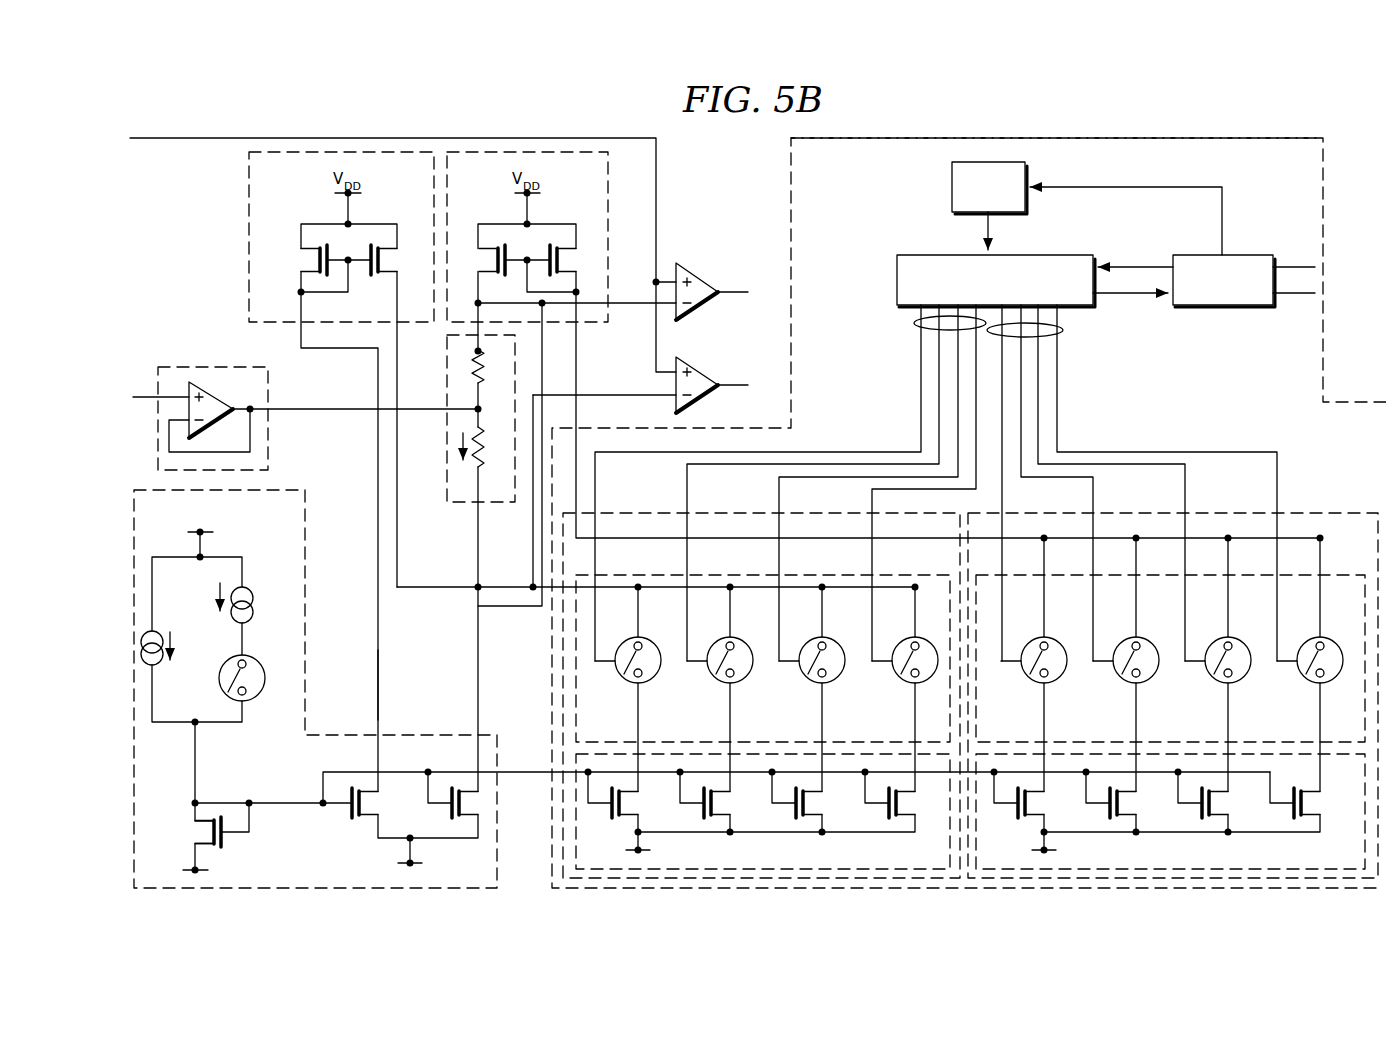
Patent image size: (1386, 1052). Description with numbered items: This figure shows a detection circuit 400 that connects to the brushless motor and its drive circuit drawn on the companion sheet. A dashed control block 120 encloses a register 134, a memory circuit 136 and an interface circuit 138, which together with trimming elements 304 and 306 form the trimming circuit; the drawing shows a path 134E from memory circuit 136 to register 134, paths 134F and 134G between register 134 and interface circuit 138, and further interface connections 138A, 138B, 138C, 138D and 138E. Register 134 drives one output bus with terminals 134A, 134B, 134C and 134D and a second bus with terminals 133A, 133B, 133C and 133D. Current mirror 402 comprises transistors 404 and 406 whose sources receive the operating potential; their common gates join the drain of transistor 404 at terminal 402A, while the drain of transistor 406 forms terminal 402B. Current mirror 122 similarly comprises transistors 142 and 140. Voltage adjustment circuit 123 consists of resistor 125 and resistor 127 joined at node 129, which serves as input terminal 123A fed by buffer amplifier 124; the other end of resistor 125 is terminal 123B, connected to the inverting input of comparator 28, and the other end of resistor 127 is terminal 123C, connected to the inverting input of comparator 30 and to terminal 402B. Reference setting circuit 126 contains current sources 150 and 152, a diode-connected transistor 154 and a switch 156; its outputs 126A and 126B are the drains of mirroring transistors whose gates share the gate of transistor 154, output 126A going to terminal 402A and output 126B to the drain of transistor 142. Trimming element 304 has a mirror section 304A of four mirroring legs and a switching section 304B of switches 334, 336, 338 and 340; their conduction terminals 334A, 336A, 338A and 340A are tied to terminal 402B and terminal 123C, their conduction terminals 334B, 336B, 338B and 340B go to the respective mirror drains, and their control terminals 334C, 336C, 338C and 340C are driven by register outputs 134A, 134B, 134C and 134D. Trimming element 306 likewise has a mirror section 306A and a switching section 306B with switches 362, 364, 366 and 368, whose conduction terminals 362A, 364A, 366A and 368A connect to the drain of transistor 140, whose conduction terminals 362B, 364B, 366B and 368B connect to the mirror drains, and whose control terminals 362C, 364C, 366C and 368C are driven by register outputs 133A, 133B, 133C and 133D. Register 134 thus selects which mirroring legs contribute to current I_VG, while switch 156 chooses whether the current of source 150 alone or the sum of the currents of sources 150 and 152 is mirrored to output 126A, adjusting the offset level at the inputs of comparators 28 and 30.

The detection circuit 400 is at (1292, 124).
The control circuit 120 is at (1125, 138).
The memory circuit 136 is at (1005, 162).
The register 134 is at (920, 255).
The memory element output 134E is at (990, 240).
The register input 134F is at (1120, 265).
The register output 134G is at (1105, 296).
The output terminal 134A is at (921, 356).
The output terminal 134B is at (939, 382).
The output terminal 134C is at (958, 407).
The output terminal 134D is at (976, 432).
The output terminal 133A is at (1002, 432).
The output terminal 133B is at (1021, 407).
The output terminal 133C is at (1038, 382).
The output terminal 133D is at (1057, 356).
The interface circuit 138 is at (1230, 305).
The interface circuit output 138A is at (1222, 250).
The interface circuit output 138B is at (1160, 264).
The interface circuit input 138C is at (1160, 296).
The interface circuit terminal 138D is at (1292, 264).
The interface circuit terminal 138E is at (1295, 296).
The current mirror 402 is at (249, 221).
The transistor 404 is at (300, 268).
The transistor 406 is at (405, 268).
The terminal 402A is at (300, 310).
The terminal 402B is at (397, 311).
The current mirror 122 is at (607, 212).
The transistor 142 is at (478, 268).
The transistor 140 is at (580, 268).
The comparator 28 is at (699, 270).
The comparator 30 is at (699, 364).
The buffer amplifier 124 is at (225, 367).
The voltage adjustment circuit 123 is at (474, 434).
The input terminal 123A is at (430, 409).
The terminal 123B is at (478, 338).
The terminal 123C is at (478, 510).
The resistor 125 is at (486, 364).
The resistor 127 is at (486, 445).
The node 129 is at (480, 409).
The reference setting circuit 126 is at (305, 615).
The output terminal 126A is at (380, 712).
The output terminal 126B is at (407, 737).
The current source 150 is at (162, 668).
The current source 152 is at (252, 592).
The transistor 154 is at (203, 833).
The switch 156 is at (265, 678).
The trimming element 304 is at (812, 513).
The mirror section 304A is at (796, 866).
The switching section 304B is at (698, 575).
The trimming element 306 is at (1127, 513).
The mirror section 306A is at (1186, 866).
The switching section 306B is at (1035, 575).
The switch 334 is at (660, 668).
The conduction terminal 334A is at (640, 626).
The conduction terminal 334B is at (639, 697).
The control terminal 334C is at (598, 666).
The switch 336 is at (752, 668).
The conduction terminal 336A is at (732, 626).
The conduction terminal 336B is at (731, 697).
The control terminal 336C is at (690, 666).
The switch 338 is at (844, 668).
The conduction terminal 338A is at (824, 626).
The conduction terminal 338B is at (823, 697).
The control terminal 338C is at (782, 666).
The switch 340 is at (937, 668).
The conduction terminal 340A is at (917, 626).
The conduction terminal 340B is at (916, 697).
The control terminal 340C is at (875, 666).
The switch 362 is at (1066, 668).
The conduction terminal 362A is at (1046, 626).
The conduction terminal 362B is at (1045, 697).
The control terminal 362C is at (1004, 666).
The switch 364 is at (1158, 668).
The conduction terminal 364A is at (1138, 626).
The conduction terminal 364B is at (1137, 697).
The control terminal 364C is at (1096, 666).
The switch 366 is at (1250, 668).
The conduction terminal 366A is at (1230, 626).
The conduction terminal 366B is at (1229, 697).
The control terminal 366C is at (1188, 666).
The switch 368 is at (1342, 668).
The conduction terminal 368A is at (1322, 626).
The conduction terminal 368B is at (1321, 697).
The control terminal 368C is at (1280, 666).